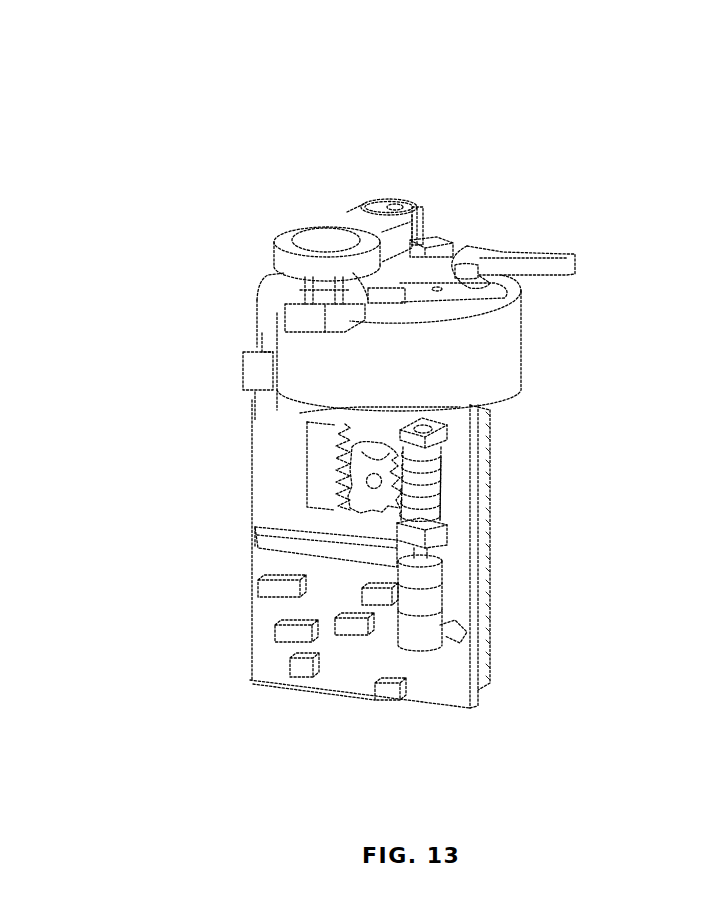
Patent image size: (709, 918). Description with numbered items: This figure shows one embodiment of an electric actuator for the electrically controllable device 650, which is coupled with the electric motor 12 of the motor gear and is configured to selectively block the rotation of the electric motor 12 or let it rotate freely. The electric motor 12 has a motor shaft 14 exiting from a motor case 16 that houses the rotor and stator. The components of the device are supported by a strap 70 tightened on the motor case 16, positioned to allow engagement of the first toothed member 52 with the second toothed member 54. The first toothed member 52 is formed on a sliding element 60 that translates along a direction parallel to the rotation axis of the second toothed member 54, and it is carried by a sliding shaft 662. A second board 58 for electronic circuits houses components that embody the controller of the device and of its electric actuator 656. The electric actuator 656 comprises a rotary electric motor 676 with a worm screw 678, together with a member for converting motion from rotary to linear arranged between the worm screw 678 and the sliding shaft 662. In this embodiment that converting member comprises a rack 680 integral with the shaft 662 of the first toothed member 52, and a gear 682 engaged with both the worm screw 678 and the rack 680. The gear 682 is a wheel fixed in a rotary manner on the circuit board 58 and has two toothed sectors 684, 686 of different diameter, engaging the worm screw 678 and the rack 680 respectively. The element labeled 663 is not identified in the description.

The electric motor 12 is at (600, 485).
The motor shaft 14 is at (398, 205).
The motor case 16 is at (487, 657).
The first toothed member 52 is at (360, 220).
The second toothed member 54 is at (414, 205).
The second board for electronic circuits 58 is at (268, 614).
The sliding element 60 is at (283, 257).
The strap 70 is at (515, 350).
The electrically controllable device 650 is at (388, 142).
The electric actuator 656 is at (470, 530).
The sliding shaft 662 is at (328, 292).
The block 663 is at (335, 305).
The rotary electric motor 676 is at (423, 583).
The worm screw 678 is at (440, 486).
The rack 680 is at (323, 447).
The gear 682 is at (358, 487).
The toothed sector 684 is at (400, 480).
The toothed sector 686 is at (337, 470).